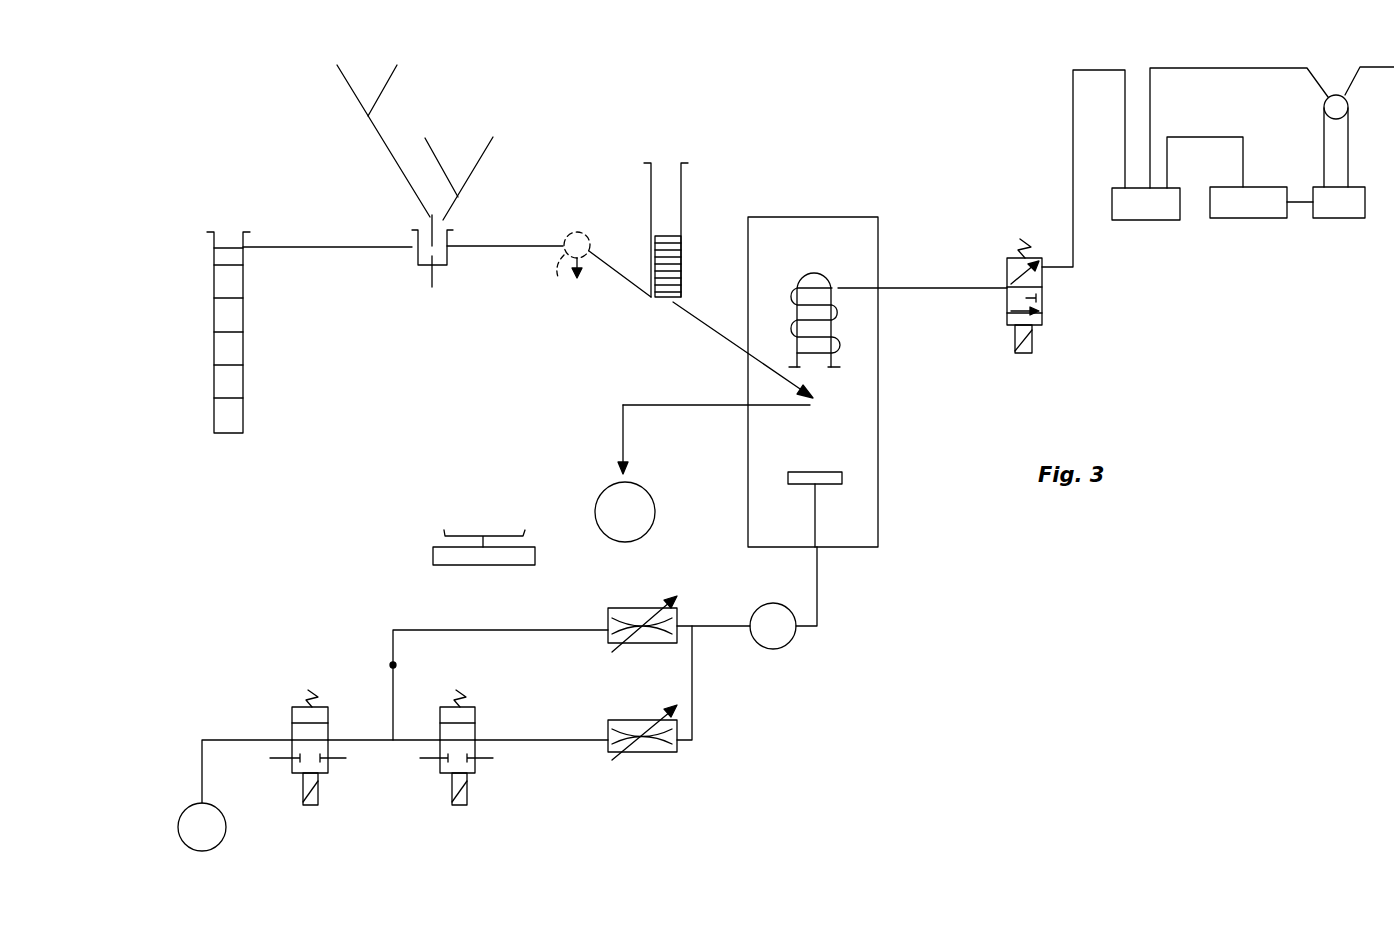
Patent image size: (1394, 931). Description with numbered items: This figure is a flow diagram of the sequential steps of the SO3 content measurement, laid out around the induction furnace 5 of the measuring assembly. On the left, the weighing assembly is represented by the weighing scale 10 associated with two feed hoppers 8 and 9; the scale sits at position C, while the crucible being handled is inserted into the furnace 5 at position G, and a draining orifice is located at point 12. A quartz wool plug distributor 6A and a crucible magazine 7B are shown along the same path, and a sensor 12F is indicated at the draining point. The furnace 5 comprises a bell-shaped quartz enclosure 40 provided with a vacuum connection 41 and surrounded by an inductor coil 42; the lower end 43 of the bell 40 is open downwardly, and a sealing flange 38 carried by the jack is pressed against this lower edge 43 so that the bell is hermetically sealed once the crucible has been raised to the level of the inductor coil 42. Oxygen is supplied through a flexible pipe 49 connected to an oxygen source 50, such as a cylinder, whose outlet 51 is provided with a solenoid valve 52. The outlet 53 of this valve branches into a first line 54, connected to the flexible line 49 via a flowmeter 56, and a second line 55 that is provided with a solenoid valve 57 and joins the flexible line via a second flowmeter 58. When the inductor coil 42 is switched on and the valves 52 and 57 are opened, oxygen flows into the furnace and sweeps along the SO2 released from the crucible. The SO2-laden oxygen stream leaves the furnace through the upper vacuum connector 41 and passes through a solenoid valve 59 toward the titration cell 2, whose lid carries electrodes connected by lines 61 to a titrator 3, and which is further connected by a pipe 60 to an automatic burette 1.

The automatic burette 1 is at (1328, 220).
The titration cell 2 is at (1133, 222).
The titrator 3 is at (1233, 220).
The induction furnace 5 is at (813, 382).
The filter column 6A is at (649, 299).
The sample column 7B is at (218, 234).
The feed hopper 8 is at (350, 86).
The feed hopper 9 is at (470, 163).
The weighing scale 10 is at (433, 554).
The draining orifice 12 is at (640, 518).
The flow sensor 12F is at (568, 267).
The sealing flange 38 is at (842, 478).
The bell-shaped quartz enclosure 40 is at (822, 275).
The vacuum connection 41 is at (933, 290).
The inductor coil 42 is at (845, 345).
The lower end of the bell 43 is at (820, 366).
The flexible pipe 49 is at (732, 630).
The oxygen source 50 is at (227, 827).
The outlet 51 is at (204, 775).
The solenoid valve 52 is at (292, 715).
The outlet 53 is at (387, 668).
The first line 54 is at (470, 633).
The second line 55 is at (411, 742).
The flowmeter 56 is at (626, 608).
The solenoid valve 57 is at (475, 712).
The second flowmeter 58 is at (655, 752).
The solenoid valve 59 is at (1043, 317).
The pipe 60 is at (1233, 70).
The lines 61 is at (1209, 141).
The position C is at (432, 265).
The position G is at (795, 418).